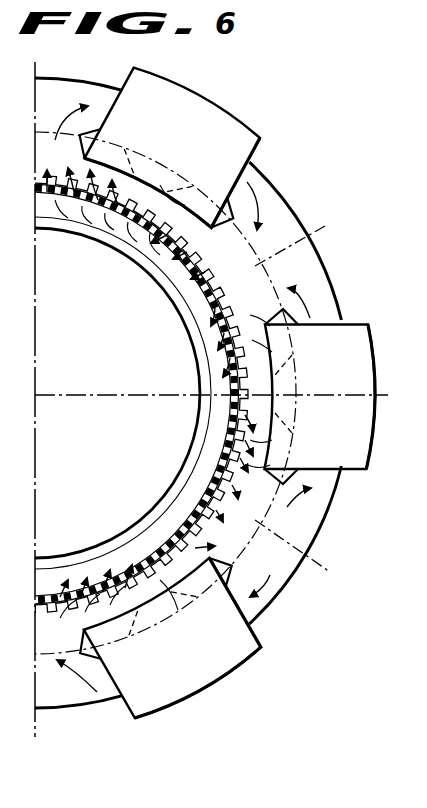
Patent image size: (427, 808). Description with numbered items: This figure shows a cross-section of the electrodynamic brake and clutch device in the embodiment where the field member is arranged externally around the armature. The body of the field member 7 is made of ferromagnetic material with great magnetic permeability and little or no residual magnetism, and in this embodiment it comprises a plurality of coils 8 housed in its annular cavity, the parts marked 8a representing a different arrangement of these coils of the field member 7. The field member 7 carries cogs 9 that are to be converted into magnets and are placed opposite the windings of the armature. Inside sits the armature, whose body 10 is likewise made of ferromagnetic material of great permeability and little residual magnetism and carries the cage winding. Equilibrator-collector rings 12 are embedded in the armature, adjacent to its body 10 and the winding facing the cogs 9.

The field member 7 is at (283, 223).
The coil 8 is at (220, 125).
The different arrangement of the coils 8a is at (200, 203).
The cogs 9 is at (200, 270).
The armature body 10 is at (148, 263).
The equilibrator-collector rings 12 is at (202, 298).